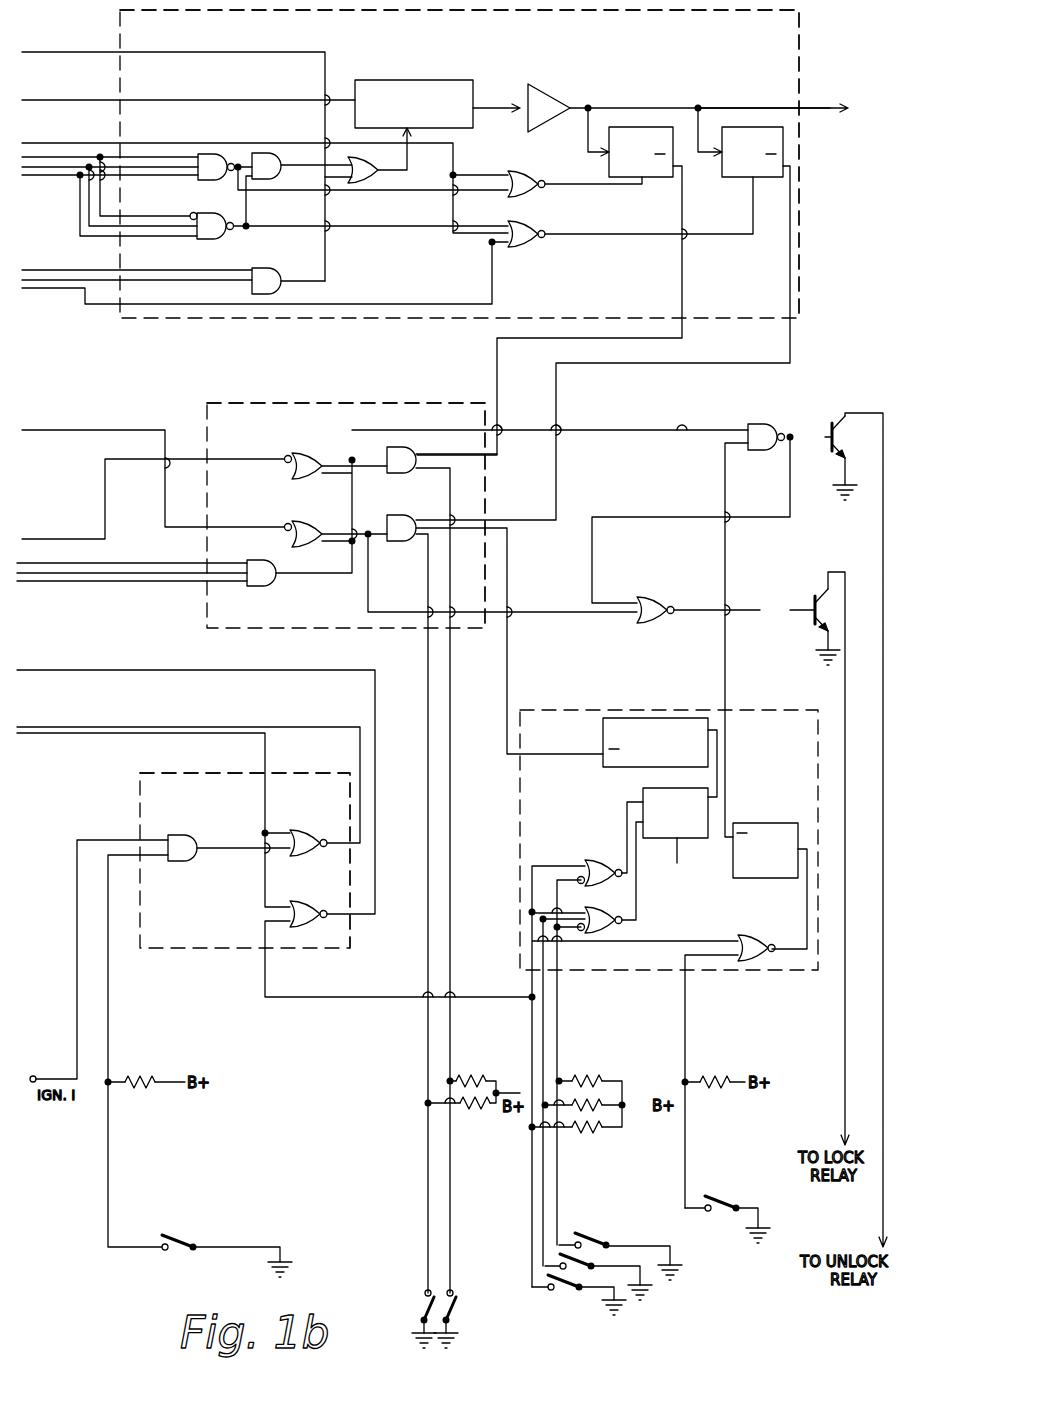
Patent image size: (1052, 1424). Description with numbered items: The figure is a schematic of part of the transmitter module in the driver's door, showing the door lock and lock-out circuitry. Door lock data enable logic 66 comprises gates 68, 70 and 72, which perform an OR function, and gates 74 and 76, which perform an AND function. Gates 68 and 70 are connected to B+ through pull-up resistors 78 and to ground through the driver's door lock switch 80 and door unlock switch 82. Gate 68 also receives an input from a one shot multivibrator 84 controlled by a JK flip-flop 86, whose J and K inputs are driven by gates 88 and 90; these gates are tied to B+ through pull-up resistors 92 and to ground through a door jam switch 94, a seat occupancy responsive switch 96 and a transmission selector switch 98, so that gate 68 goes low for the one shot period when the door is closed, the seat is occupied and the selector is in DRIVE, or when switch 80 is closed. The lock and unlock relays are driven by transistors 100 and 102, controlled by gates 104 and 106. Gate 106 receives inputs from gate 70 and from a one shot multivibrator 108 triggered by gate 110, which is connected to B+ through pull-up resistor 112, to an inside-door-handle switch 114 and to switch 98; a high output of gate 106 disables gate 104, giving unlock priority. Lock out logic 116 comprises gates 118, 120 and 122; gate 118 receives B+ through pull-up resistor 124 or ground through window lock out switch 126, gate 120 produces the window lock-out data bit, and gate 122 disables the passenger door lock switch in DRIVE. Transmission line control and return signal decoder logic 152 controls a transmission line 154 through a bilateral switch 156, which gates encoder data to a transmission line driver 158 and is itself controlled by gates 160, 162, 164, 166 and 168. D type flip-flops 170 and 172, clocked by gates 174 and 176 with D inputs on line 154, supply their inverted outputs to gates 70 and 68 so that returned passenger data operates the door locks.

The door lock data enable logic 66 is at (288, 405).
The gate 68 is at (405, 532).
The gate 70 is at (408, 465).
The gate 72 is at (268, 575).
The gate 74 is at (305, 462).
The gate 76 is at (305, 530).
The pull-up resistors 78 is at (482, 1120).
The driver's door lock switch 80 is at (420, 1305).
The door unlock switch 82 is at (455, 1305).
The one shot multivibrator 84 is at (625, 718).
The JK flip-flop 86 is at (668, 790).
The gate 88 is at (600, 868).
The gate 90 is at (615, 925).
The pull-up resistors 92 is at (596, 1066).
The door jam switch 94 is at (592, 1235).
The seat occupancy responsive switch 96 is at (585, 1262).
The transmission selector switch 98 is at (568, 1290).
The transistor 100 is at (815, 600).
The transistor 102 is at (832, 445).
The gate 104 is at (652, 605).
The gate 106 is at (762, 435).
The one shot multivibrator 108 is at (770, 823).
The gate 110 is at (752, 945).
The pull-up resistor 112 is at (705, 1078).
The switch 114 is at (720, 1200).
The lock out logic 116 is at (180, 940).
The gate 118 is at (180, 838).
The gate 120 is at (305, 838).
The gate 122 is at (303, 910).
The pull-up resistor 124 is at (140, 1086).
The window lock out switch 126 is at (180, 1238).
The transmission line control logic and return signal decoder logic 152 is at (802, 272).
The transmission line 154 is at (757, 108).
The bilateral switch 156 is at (430, 80).
The transmission line driver 158 is at (552, 110).
The gate 160 is at (210, 160).
The gate 162 is at (215, 232).
The gate 164 is at (266, 162).
The gate 166 is at (262, 278).
The gate 168 is at (365, 178).
The D type flip-flop 170 is at (648, 180).
The D type flip-flop 172 is at (737, 180).
The gate 174 is at (520, 182).
The gate 176 is at (528, 240).